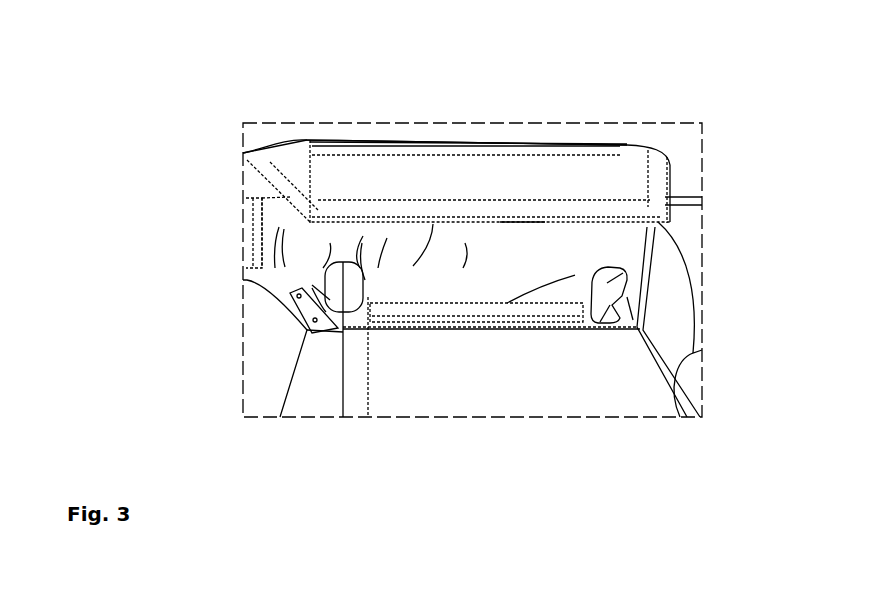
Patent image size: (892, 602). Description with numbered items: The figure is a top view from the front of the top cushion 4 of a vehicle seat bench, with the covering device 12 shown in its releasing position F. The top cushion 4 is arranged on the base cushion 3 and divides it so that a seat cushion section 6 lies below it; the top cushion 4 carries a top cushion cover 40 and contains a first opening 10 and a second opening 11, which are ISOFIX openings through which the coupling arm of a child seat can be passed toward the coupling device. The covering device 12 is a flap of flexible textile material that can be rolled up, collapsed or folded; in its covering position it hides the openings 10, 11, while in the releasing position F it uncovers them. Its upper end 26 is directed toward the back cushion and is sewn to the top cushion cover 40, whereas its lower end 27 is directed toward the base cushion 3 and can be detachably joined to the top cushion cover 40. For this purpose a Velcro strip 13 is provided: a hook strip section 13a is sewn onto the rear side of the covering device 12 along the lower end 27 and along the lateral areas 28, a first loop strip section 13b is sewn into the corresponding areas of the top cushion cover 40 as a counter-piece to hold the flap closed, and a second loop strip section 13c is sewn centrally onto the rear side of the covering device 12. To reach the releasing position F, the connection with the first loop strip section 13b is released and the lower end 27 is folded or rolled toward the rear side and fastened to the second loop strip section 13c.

The base cushion 3 is at (491, 341).
The top cushion 4 is at (481, 273).
The seat cushion section 6 is at (490, 379).
The first opening 10 is at (642, 277).
The second opening 11 is at (335, 298).
The covering device 12 is at (467, 163).
The releasing position F is at (503, 187).
The Velcro strip 13 is at (457, 176).
The hook strip section 13a is at (357, 218).
The first loop strip section 13b is at (262, 215).
The second loop strip section 13c is at (444, 150).
The upper end 26 is at (258, 180).
The lower end 27 is at (524, 215).
The lateral areas 28 is at (284, 180).
The top cushion cover 40 is at (584, 250).